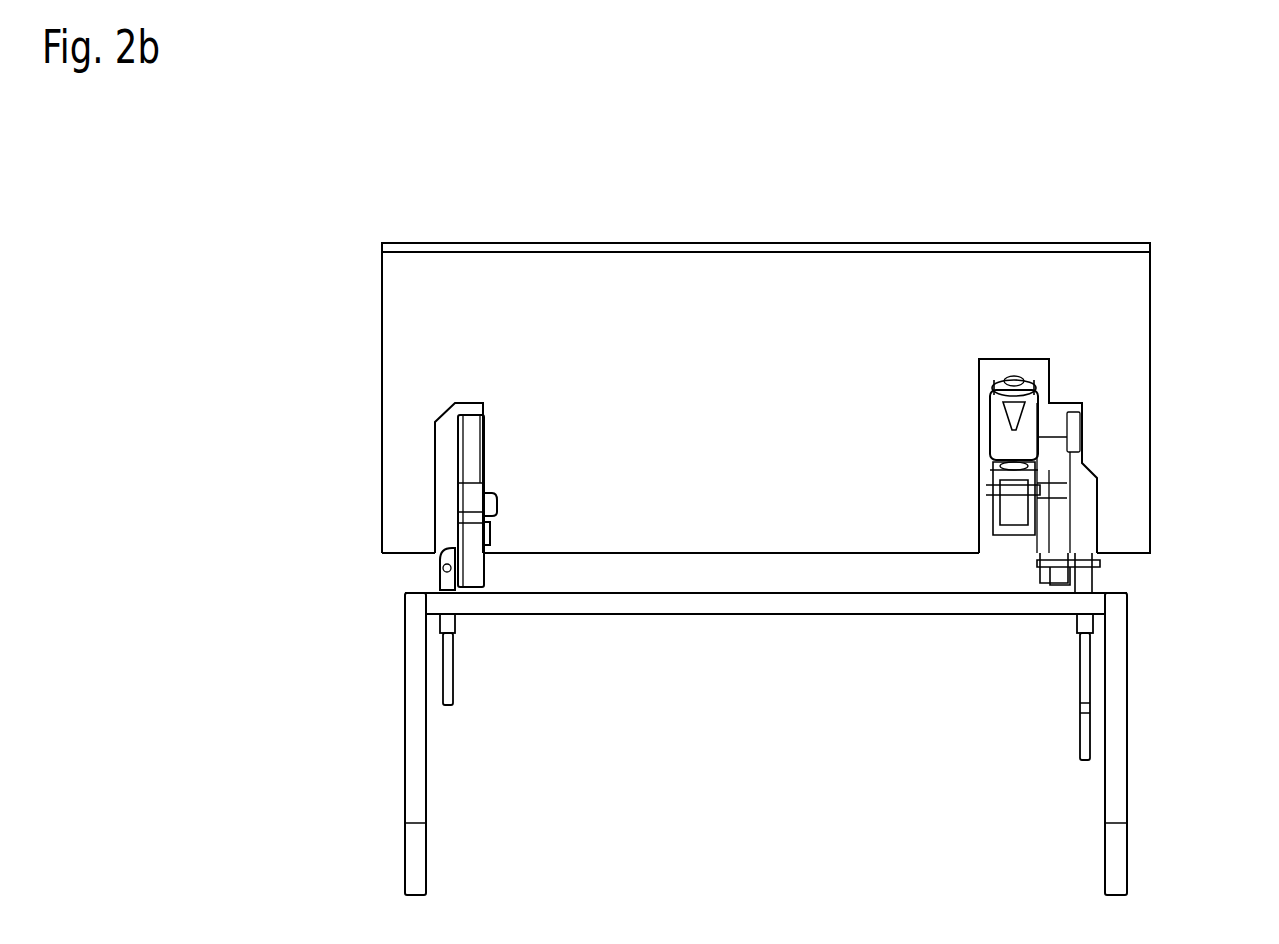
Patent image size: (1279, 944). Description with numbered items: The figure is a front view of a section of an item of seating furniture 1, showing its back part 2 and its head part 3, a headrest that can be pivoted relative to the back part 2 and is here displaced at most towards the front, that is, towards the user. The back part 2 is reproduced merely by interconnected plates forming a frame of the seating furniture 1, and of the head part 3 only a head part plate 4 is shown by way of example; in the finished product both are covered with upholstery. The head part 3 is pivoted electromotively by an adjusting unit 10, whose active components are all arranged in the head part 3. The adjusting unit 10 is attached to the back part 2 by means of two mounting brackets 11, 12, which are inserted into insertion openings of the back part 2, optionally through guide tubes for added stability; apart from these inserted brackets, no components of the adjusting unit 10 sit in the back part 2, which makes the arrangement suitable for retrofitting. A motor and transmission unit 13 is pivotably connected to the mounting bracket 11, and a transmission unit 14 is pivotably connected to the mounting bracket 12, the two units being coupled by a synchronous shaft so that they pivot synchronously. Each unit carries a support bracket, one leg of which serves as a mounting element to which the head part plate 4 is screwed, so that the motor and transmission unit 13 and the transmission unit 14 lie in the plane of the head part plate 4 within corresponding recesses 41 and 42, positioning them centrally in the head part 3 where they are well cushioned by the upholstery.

The item of seating furniture 1 is at (372, 813).
The back part 2 is at (624, 603).
The head part 3 is at (1196, 449).
The head part plate 4 is at (1118, 280).
The adjusting unit 10 is at (1126, 578).
The mounting bracket 11 is at (1087, 662).
The mounting bracket 12 is at (443, 668).
The motor and transmission unit 13 is at (1000, 411).
The transmission unit 14 is at (475, 455).
The recess 41 is at (1085, 405).
The recess 42 is at (452, 428).